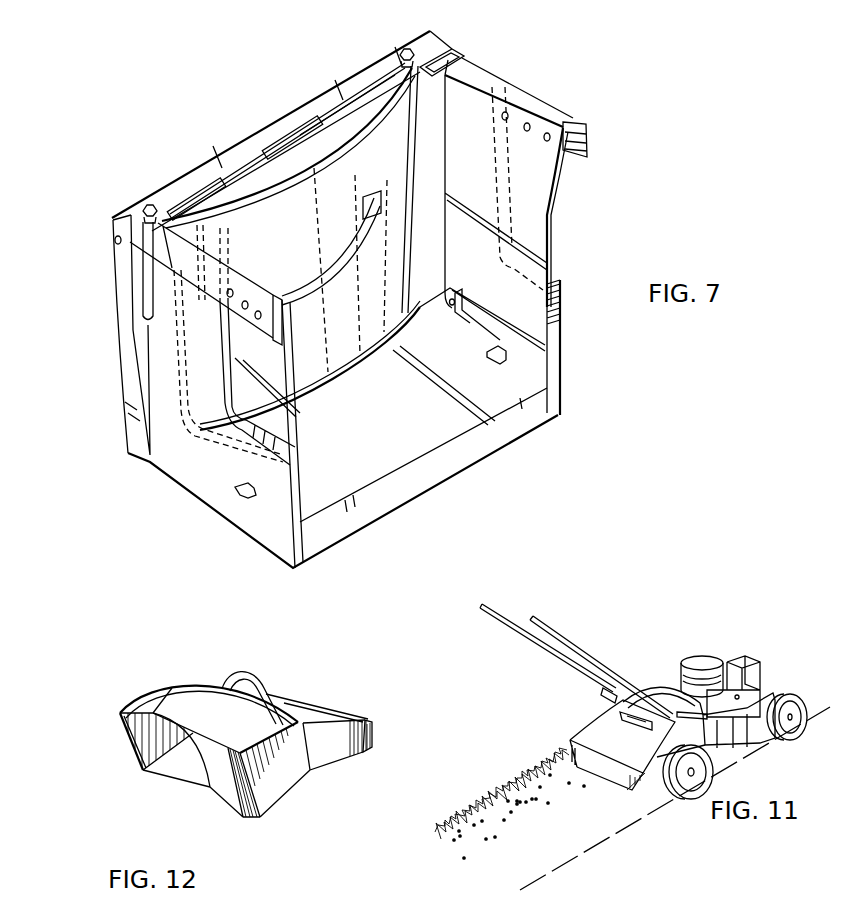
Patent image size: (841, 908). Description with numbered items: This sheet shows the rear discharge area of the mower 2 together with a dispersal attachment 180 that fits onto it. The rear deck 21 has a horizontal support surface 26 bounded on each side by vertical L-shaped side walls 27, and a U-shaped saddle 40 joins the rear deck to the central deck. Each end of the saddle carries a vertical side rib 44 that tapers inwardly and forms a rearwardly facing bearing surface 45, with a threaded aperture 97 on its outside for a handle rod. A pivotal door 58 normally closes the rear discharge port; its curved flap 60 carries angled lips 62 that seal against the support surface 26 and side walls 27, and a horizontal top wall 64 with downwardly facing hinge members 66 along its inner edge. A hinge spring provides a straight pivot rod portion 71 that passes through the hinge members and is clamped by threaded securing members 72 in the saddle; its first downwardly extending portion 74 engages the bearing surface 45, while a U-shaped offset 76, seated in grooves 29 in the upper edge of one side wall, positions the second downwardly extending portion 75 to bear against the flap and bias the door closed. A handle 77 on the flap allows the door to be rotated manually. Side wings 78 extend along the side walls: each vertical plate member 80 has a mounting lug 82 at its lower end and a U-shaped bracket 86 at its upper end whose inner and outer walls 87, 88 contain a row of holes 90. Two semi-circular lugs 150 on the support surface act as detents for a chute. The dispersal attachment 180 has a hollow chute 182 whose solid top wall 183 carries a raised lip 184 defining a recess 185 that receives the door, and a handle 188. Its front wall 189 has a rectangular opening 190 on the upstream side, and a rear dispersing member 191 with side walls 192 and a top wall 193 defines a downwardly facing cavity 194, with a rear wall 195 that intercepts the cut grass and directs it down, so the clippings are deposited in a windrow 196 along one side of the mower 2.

In FIG. 7, the rear deck 21 is at (343, 478).
In FIG. 7, the support surface 26 is at (463, 367).
In FIG. 7, the side walls 27 is at (354, 360).
In FIG. 7, the grooves 29 is at (436, 104).
In FIG. 7, the saddle 40 is at (271, 131).
In FIG. 7, the side rib 44 is at (279, 156).
In FIG. 7, the bearing surface 45 is at (110, 314).
In FIG. 7, the door 58 is at (335, 110).
In FIG. 7, the flap 60 is at (292, 270).
In FIG. 7, the lips 62 is at (322, 315).
In FIG. 7, the top wall 64 is at (288, 148).
In FIG. 7, the hinge members 66 is at (286, 141).
In FIG. 7, the pivot rod portion 71 is at (347, 105).
In FIG. 7, the securing members 72 is at (276, 116).
In FIG. 7, the first downwardly extending portion 74 is at (119, 294).
In FIG. 7, the second downwardly extending portion 75 is at (395, 189).
In FIG. 7, the offset 76 is at (509, 80).
In FIG. 7, the handle 77 is at (331, 248).
In FIG. 7, the side wings 78 is at (383, 348).
In FIG. 7, the vertical plate member 80 is at (496, 191).
In FIG. 7, the mounting lug 82 is at (475, 314).
In FIG. 7, the U-shaped bracket 86 is at (345, 198).
In FIG. 7, the inner wall 87 is at (576, 219).
In FIG. 7, the outer wall 88 is at (405, 233).
In FIG. 7, the holes 90 is at (425, 238).
In FIG. 7, the threaded aperture 97 is at (107, 215).
In FIG. 7, the lugs 150 is at (338, 439).
In FIG. 12, the dispersal attachment 180 is at (323, 674).
In FIG. 11, the dispersal attachment 180 is at (607, 734).
In FIG. 12, the chute 182 is at (277, 775).
In FIG. 11, the chute 182 is at (651, 687).
In FIG. 12, the top wall 183 is at (165, 727).
In FIG. 12, the raised lip 184 is at (209, 694).
In FIG. 12, the recess 185 is at (183, 664).
In FIG. 12, the handle 188 is at (256, 682).
In FIG. 12, the front wall 189 is at (233, 796).
In FIG. 12, the opening 190 is at (188, 765).
In FIG. 12, the dispersing member 191 is at (390, 724).
In FIG. 11, the dispersing member 191 is at (580, 769).
In FIG. 12, the side walls 192 is at (344, 756).
In FIG. 11, the side walls 192 is at (643, 795).
In FIG. 12, the top wall 193 is at (323, 699).
In FIG. 11, the cavity 194 is at (675, 807).
In FIG. 11, the rear wall 195 is at (610, 795).
In FIG. 11, the windrow 196 is at (510, 803).
In FIG. 11, the mower 2 is at (765, 761).